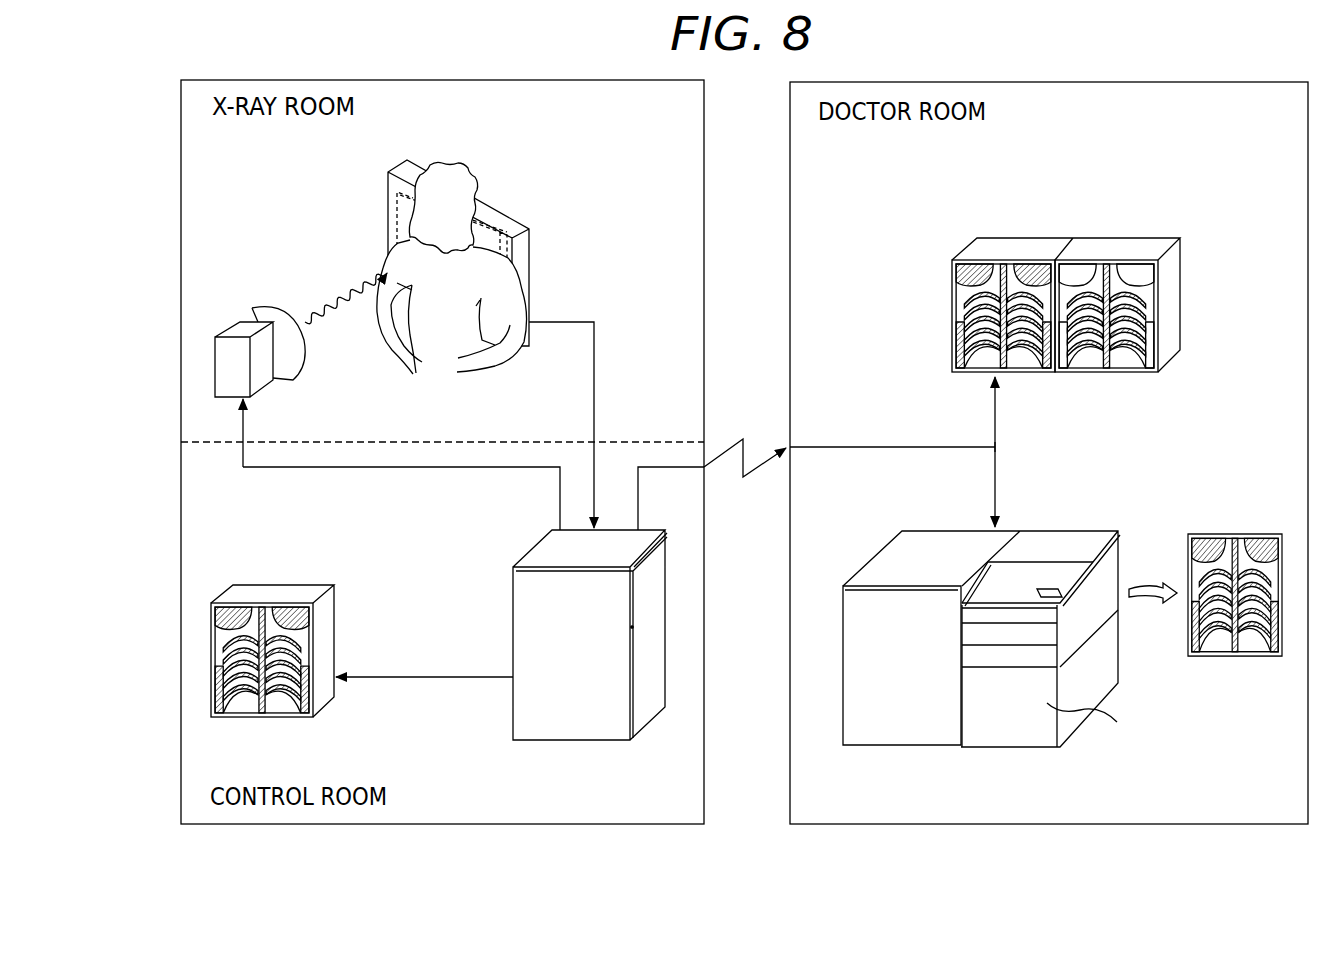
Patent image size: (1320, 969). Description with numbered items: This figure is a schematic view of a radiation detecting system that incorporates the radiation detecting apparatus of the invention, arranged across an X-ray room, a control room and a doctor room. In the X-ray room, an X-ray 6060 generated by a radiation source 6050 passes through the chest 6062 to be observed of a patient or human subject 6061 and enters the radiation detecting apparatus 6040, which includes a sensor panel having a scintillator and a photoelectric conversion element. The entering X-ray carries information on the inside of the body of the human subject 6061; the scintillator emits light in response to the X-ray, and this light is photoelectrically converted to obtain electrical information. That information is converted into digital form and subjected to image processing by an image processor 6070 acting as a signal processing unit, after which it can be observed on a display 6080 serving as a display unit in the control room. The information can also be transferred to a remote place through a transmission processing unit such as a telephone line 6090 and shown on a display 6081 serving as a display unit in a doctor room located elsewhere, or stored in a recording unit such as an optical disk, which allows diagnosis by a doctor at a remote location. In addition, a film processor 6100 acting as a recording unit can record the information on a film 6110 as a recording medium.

The radiation detecting apparatus 6040 is at (508, 257).
The radiation source 6050 is at (238, 332).
The X-ray 6060 is at (338, 287).
The human subject 6061 is at (467, 287).
The chest 6062 is at (440, 323).
The image processor 6070 is at (543, 732).
The display 6080 is at (277, 593).
The display 6081 is at (993, 245).
The telephone line 6090 is at (734, 440).
The film processor 6100 is at (897, 733).
The film 6110 is at (1210, 538).